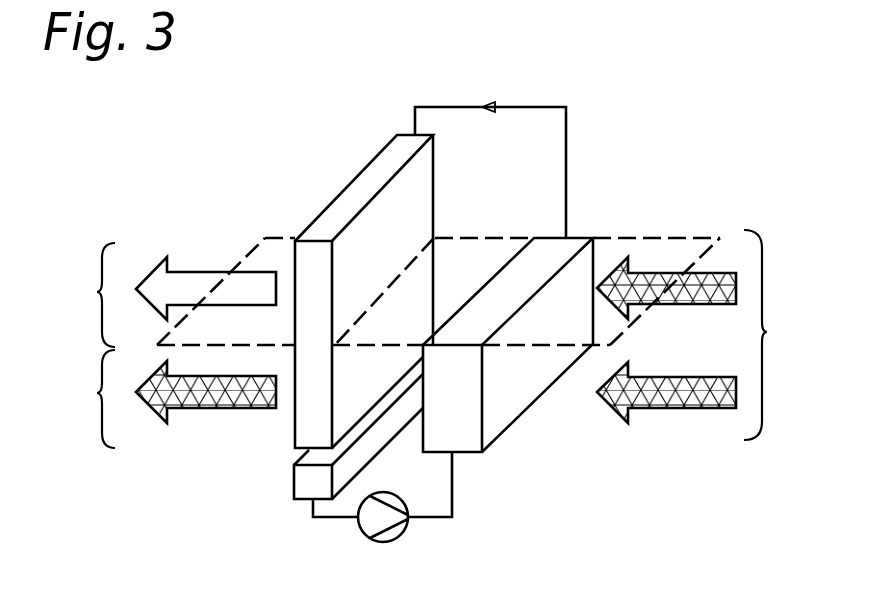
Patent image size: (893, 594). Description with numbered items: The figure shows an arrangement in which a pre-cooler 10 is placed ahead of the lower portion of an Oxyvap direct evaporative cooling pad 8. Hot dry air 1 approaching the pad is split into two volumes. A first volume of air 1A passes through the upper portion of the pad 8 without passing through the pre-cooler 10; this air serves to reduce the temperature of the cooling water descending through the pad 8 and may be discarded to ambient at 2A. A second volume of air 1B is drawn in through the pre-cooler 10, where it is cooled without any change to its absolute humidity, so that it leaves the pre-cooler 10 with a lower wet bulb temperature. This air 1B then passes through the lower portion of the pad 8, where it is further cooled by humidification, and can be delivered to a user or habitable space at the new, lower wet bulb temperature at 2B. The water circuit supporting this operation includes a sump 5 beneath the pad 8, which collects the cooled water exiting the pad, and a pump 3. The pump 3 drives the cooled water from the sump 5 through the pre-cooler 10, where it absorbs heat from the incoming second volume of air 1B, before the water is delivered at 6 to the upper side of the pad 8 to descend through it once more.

The hot dry air 1 is at (768, 332).
The first volume of air 1A is at (738, 263).
The second volume of air 1B is at (718, 380).
The discarded air outlet 2A is at (97, 292).
The delivered air outlet 2B is at (97, 393).
The pump 3 is at (384, 542).
The sump 5 is at (300, 488).
The water delivery point 6 is at (508, 107).
The pad 8 is at (357, 188).
The pre-cooler 10 is at (502, 422).